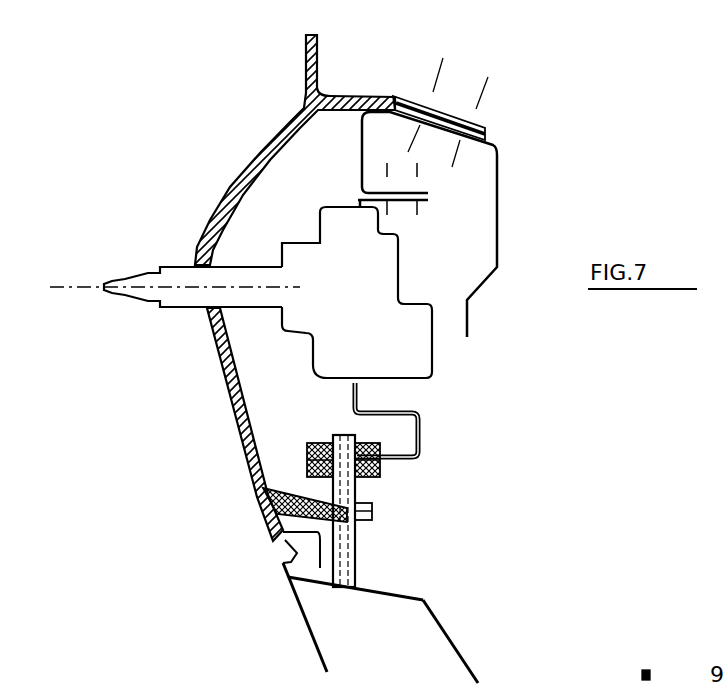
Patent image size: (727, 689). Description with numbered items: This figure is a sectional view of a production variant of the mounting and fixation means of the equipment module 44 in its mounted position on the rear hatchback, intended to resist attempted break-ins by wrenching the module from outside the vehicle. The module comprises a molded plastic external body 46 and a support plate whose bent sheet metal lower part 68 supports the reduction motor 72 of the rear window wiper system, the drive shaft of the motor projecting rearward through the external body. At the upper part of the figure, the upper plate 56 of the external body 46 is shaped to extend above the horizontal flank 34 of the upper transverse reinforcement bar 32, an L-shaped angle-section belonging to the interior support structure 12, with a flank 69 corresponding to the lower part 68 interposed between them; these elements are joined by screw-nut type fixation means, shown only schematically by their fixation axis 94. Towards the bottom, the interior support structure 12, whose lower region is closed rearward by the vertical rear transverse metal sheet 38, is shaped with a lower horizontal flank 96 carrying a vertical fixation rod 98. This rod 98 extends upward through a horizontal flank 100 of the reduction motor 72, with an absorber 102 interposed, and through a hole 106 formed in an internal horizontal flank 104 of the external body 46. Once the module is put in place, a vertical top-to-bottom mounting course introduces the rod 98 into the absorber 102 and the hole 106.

The interior support structure 12 is at (467, 634).
The upper transverse reinforcement bar 32 is at (514, 212).
The horizontal flank 34 is at (464, 225).
The rear transverse metal sheet 38 is at (303, 622).
The equipment module 44 is at (200, 203).
The external body 46 is at (199, 331).
The plate 56 is at (458, 205).
The lower part 68 is at (353, 137).
The flank 69 is at (494, 143).
The reduction motor 72 is at (434, 362).
The fixation axis 94 is at (443, 70).
The lower horizontal flank 96 is at (385, 600).
The vertical fixation rod 98 is at (357, 559).
The horizontal flank 100 is at (407, 479).
The absorber 102 is at (322, 443).
The internal horizontal flank 104 is at (283, 575).
The hole 106 is at (347, 496).